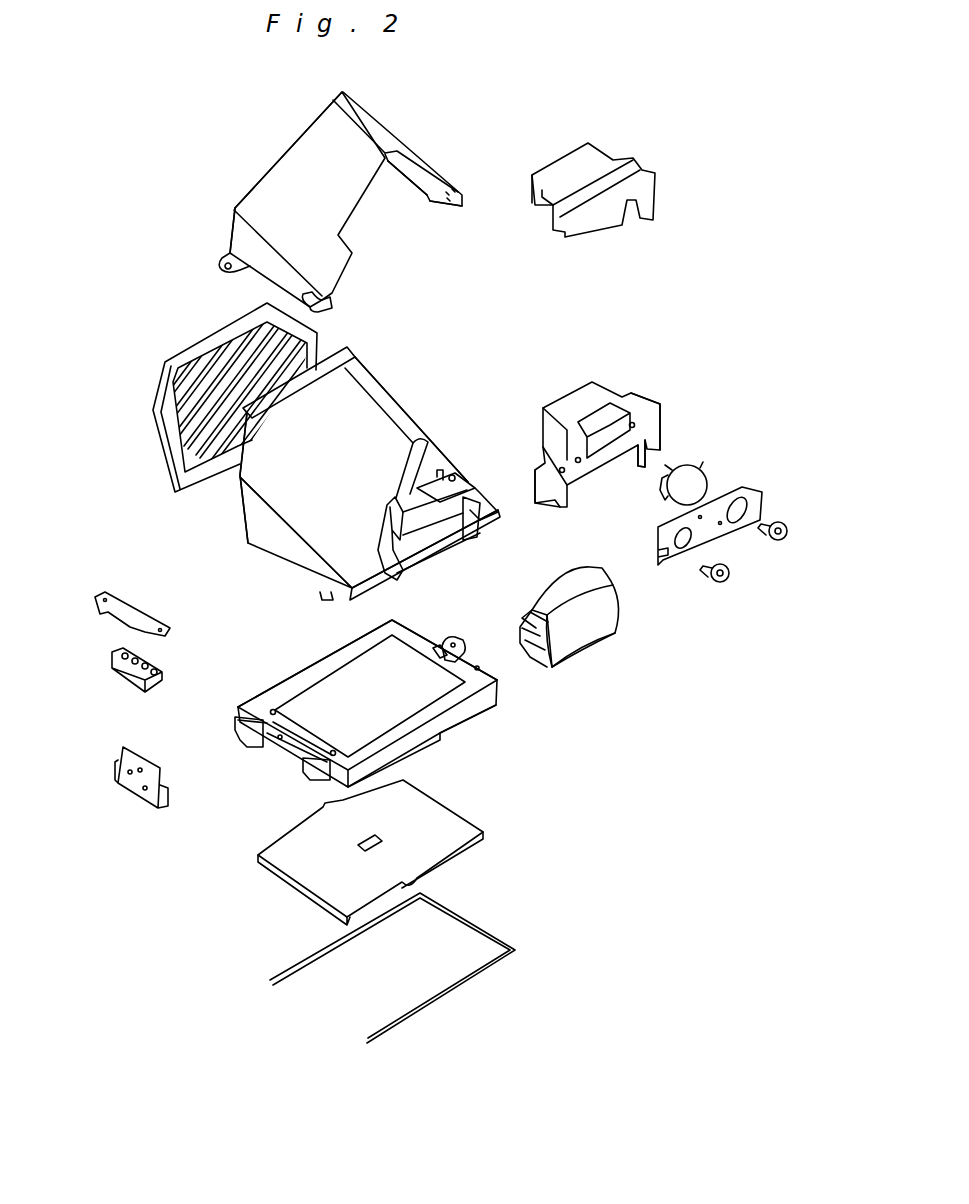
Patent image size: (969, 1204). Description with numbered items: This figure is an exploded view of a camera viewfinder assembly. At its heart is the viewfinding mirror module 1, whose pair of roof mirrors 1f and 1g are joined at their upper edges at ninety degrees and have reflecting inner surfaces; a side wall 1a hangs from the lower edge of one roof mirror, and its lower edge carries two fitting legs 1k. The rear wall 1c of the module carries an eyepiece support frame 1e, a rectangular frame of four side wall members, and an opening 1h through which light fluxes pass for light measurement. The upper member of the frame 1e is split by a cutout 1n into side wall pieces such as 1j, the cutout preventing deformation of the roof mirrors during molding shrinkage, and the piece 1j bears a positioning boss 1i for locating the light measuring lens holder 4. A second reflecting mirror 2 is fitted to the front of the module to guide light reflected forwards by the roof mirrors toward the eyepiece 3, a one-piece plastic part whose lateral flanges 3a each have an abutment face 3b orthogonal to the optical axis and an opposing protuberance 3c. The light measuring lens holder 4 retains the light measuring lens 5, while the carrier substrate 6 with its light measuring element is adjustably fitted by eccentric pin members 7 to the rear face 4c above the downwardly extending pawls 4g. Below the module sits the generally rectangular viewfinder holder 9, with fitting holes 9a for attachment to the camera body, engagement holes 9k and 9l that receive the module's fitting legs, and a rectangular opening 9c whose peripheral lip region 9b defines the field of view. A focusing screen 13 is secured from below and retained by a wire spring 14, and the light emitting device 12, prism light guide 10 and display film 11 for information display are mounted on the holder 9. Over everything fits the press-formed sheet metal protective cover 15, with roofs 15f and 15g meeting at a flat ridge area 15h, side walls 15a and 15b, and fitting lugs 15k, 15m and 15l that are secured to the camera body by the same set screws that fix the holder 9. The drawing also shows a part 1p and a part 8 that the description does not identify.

The viewfinding mirror module 1 is at (291, 446).
The side wall 1a is at (240, 518).
The rear wall 1c is at (372, 570).
The eyepiece support frame 1e is at (463, 530).
The roof mirror 1f is at (312, 530).
The roof mirror 1g is at (378, 388).
The opening 1h is at (419, 438).
The positioning boss 1i is at (455, 476).
The side wall piece 1j is at (437, 470).
The fitting leg 1k is at (398, 503).
The cutout 1n is at (433, 537).
The plate 1p is at (480, 498).
The second reflecting mirror 2 is at (158, 380).
The eyepiece 3 is at (597, 629).
The flange 3a is at (527, 608).
The abutment face 3b is at (524, 621).
The protuberance 3c is at (553, 645).
The light measuring lens holder 4 is at (601, 404).
The rear face 4c is at (650, 405).
The pawls 4g is at (637, 462).
The light measuring lens 5 is at (705, 473).
The carrier substrate 6 is at (745, 490).
The eccentric pin members 7 is at (735, 575).
The channel member 8 is at (578, 155).
The viewfinder holder 9 is at (406, 700).
The fitting holes 9a is at (460, 643).
The peripheral lip region 9b is at (492, 665).
The rectangular opening 9c is at (408, 715).
The engagement hole 9k is at (266, 706).
The engagement hole 9l is at (436, 646).
The light guide 10 is at (113, 668).
The display film 11 is at (110, 612).
The light emitting device 12 is at (132, 785).
The focusing screen 13 is at (465, 838).
The wire spring 14 is at (488, 935).
The protective cover 15 is at (336, 197).
The side wall 15a is at (240, 237).
The side wall 15b is at (413, 172).
The roof area 15f is at (287, 152).
The roof area 15g is at (375, 104).
The flat ridge area 15h is at (333, 101).
The fitting lug 15k is at (224, 254).
The fitting lug 15l is at (440, 168).
The fitting lug 15m is at (332, 297).